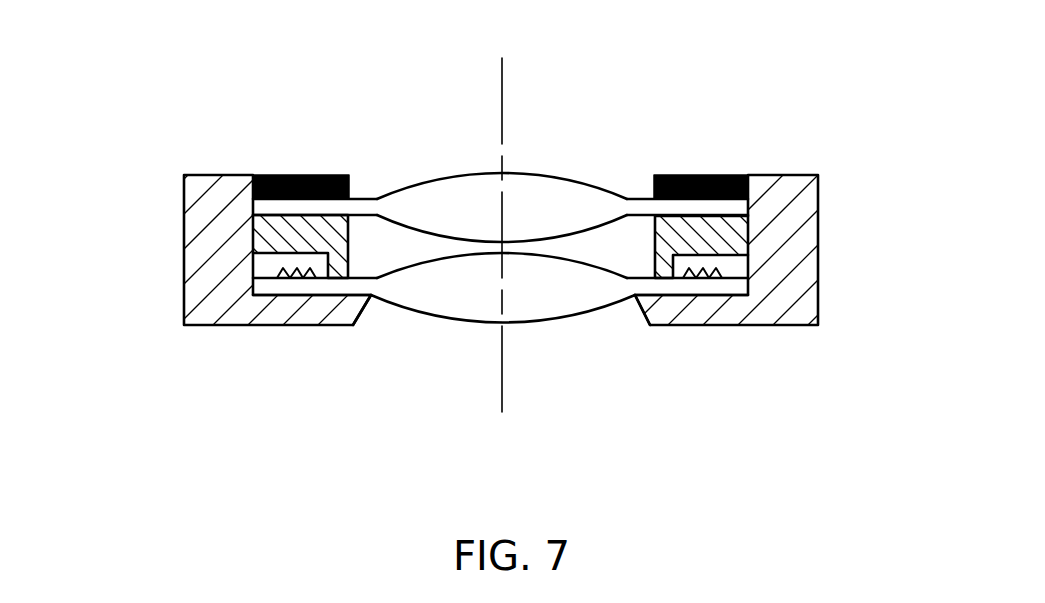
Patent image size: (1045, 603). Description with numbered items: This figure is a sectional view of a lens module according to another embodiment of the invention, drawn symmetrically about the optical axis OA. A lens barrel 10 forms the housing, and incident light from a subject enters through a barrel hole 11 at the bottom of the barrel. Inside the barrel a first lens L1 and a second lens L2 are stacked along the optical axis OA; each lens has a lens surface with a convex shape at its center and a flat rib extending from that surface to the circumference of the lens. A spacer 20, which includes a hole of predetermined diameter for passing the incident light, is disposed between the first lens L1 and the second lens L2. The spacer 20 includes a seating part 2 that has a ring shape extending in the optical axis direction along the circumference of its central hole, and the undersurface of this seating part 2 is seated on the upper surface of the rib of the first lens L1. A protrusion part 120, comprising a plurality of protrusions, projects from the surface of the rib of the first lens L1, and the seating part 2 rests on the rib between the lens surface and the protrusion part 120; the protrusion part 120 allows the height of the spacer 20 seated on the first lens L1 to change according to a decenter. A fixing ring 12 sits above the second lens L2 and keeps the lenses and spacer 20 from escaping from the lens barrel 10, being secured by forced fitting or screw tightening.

The lens barrel 10 is at (208, 248).
The barrel hole 11 is at (362, 312).
The fixing ring 12 is at (750, 181).
The seating part 2 is at (660, 265).
The spacer 20 is at (750, 232).
The protrusion part 120 is at (748, 267).
The first lens L1 is at (573, 292).
The second lens L2 is at (450, 195).
The optical axis OA is at (502, 103).